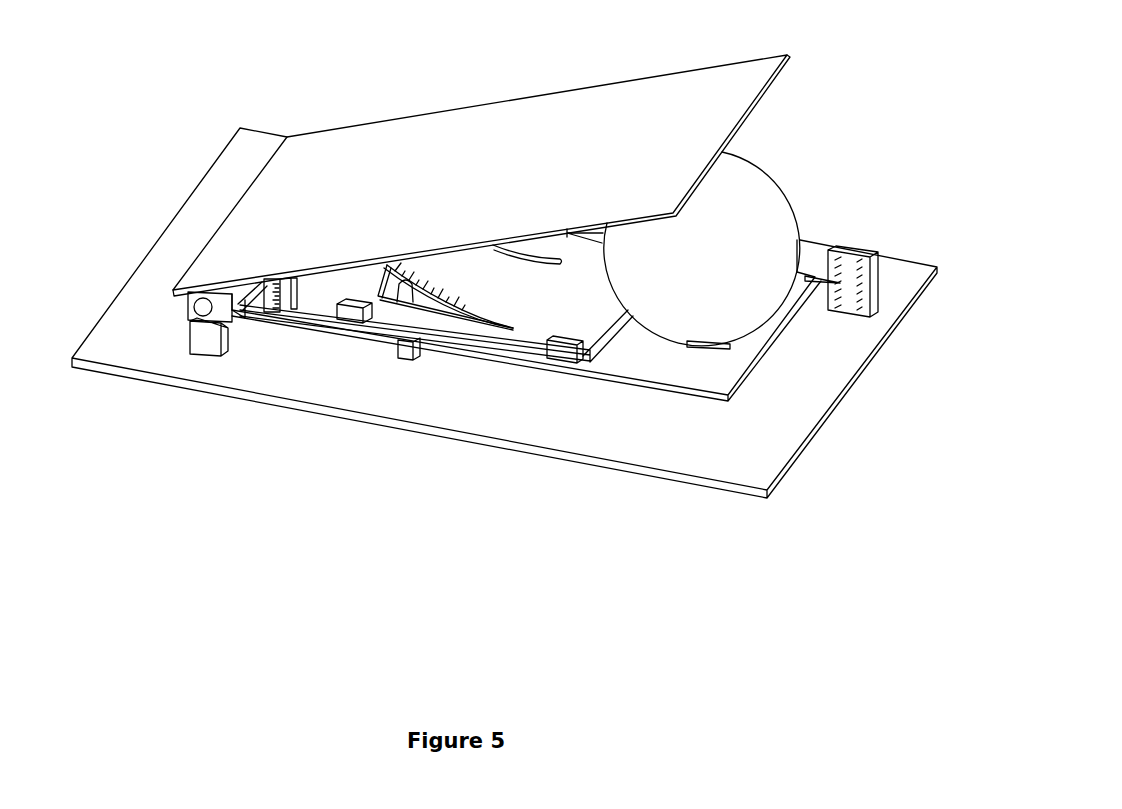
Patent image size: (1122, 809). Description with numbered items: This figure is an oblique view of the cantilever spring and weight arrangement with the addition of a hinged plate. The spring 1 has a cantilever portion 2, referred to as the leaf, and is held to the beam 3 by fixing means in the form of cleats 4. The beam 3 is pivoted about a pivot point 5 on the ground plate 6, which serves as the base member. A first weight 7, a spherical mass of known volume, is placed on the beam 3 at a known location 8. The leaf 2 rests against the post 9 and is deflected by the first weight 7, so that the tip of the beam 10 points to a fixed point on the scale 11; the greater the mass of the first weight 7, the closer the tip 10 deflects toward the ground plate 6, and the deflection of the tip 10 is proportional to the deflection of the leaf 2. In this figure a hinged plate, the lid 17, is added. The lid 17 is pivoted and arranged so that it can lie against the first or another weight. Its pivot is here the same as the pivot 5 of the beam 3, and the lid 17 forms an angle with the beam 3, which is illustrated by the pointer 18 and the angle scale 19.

The spring 1 is at (597, 318).
The cantilever portion 2 is at (487, 288).
The beam 3 is at (686, 372).
The cleats 4 is at (347, 317).
The pivot point 5 is at (202, 310).
The ground plate 6 is at (410, 403).
The first weight 7 is at (727, 193).
The known location 8 is at (723, 343).
The post 9 is at (402, 348).
The tip of the beam 10 is at (830, 278).
The scale 11 is at (863, 270).
The lid 17 is at (473, 135).
The pointer 18 is at (223, 330).
The angle scale 19 is at (287, 298).